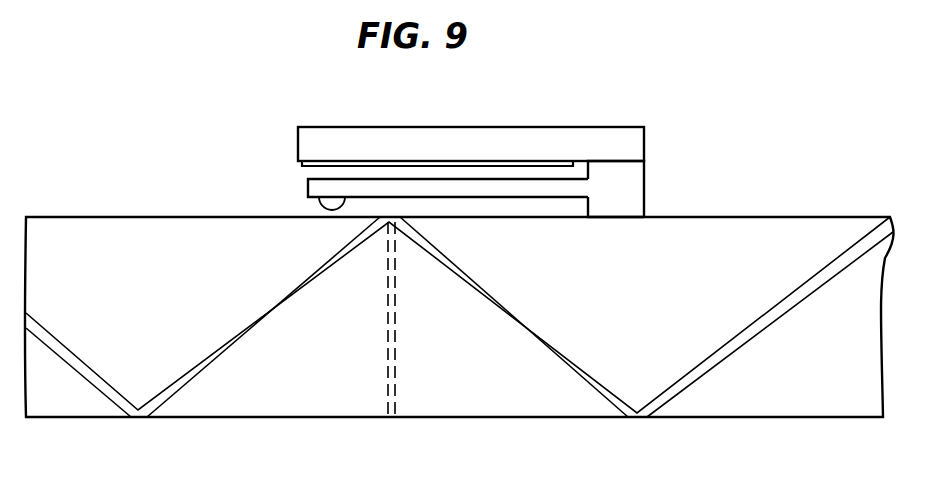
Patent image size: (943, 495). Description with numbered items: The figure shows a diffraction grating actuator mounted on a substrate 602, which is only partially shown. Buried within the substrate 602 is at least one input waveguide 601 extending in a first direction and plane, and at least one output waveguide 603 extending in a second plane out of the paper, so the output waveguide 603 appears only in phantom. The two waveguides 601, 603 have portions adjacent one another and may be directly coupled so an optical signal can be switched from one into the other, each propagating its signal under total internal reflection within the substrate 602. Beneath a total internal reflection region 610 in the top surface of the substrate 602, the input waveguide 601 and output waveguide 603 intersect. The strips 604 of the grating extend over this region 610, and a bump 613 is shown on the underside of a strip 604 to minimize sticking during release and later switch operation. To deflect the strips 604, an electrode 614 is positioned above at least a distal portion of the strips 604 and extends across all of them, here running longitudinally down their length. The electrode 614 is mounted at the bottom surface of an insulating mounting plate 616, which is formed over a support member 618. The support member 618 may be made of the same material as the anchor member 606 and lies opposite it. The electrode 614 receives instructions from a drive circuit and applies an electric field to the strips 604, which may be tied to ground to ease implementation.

The buried input waveguide 601 is at (72, 352).
The substrate 602 is at (890, 216).
The buried output waveguide 603 is at (395, 392).
The strips 604 is at (308, 190).
The anchor member 606 is at (635, 196).
The total internal reflection region 610 is at (410, 222).
The bump 613 is at (325, 210).
The electrode 614 is at (298, 165).
The insulating mounting plate 616 is at (626, 131).
The support member 618 is at (635, 171).